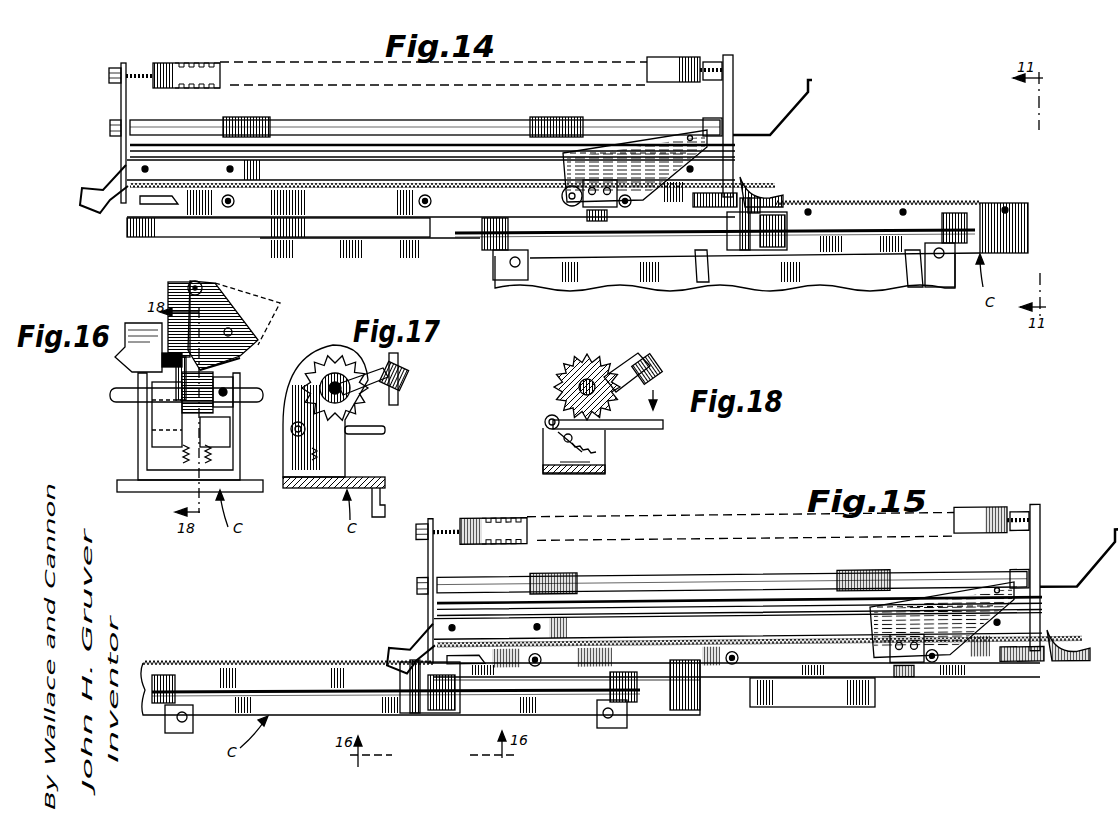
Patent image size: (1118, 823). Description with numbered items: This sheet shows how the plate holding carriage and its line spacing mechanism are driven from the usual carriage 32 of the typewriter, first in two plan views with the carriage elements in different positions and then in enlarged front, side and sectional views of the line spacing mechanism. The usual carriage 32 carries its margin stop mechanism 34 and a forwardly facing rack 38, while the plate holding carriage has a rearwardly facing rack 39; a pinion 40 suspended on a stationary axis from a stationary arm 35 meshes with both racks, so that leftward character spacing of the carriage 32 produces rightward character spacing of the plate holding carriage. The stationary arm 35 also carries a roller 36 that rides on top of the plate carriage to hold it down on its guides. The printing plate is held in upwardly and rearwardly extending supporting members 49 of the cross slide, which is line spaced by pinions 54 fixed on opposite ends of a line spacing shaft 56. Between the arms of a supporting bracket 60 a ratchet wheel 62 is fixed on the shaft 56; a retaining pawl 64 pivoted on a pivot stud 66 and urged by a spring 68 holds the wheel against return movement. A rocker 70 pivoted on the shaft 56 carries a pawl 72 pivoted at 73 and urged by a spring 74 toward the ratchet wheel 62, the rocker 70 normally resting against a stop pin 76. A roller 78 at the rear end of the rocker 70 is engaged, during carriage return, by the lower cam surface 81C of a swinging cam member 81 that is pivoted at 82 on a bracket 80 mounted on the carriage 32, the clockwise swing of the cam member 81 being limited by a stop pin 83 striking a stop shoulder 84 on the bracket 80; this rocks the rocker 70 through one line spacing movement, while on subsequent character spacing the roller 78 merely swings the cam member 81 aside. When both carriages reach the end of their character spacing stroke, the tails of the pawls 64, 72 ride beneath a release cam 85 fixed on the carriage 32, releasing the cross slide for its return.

In FIG. 14, the carriage 32 is at (746, 155).
In FIG. 15, the carriage 32 is at (1055, 628).
In FIG. 14, the margin stop mechanism 34 is at (432, 126).
In FIG. 15, the margin stop mechanism 34 is at (713, 578).
In FIG. 14, the stationary arm 35 is at (662, 180).
In FIG. 15, the stationary arm 35 is at (620, 618).
In FIG. 15, the roller 36 is at (593, 673).
In FIG. 15, the forwardly facing rack 38 is at (847, 637).
In FIG. 15, the rearwardly facing rack 39 is at (233, 663).
In FIG. 14, the pinion 40 is at (578, 192).
In FIG. 15, the pinion 40 is at (560, 648).
In FIG. 14, the supporting members 49 is at (711, 269).
In FIG. 14, the pinions 54 is at (490, 250).
In FIG. 15, the pinions 54 is at (163, 680).
In FIG. 14, the line spacing shaft 56 is at (818, 232).
In FIG. 16, the line spacing shaft 56 is at (237, 390).
In FIG. 17, the line spacing shaft 56 is at (350, 402).
In FIG. 18, the line spacing shaft 56 is at (556, 390).
In FIG. 15, the line spacing shaft 56 is at (280, 692).
In FIG. 16, the supporting bracket 60 is at (143, 427).
In FIG. 14, the ratchet wheel 62 is at (760, 250).
In FIG. 16, the ratchet wheel 62 is at (212, 374).
In FIG. 17, the ratchet wheel 62 is at (333, 365).
In FIG. 18, the ratchet wheel 62 is at (587, 352).
In FIG. 15, the ratchet wheel 62 is at (433, 713).
In FIG. 17, the retaining pawl 64 is at (388, 431).
In FIG. 17, the pivot stud 66 is at (292, 425).
In FIG. 16, the spring 68 is at (215, 452).
In FIG. 17, the spring 68 is at (320, 452).
In FIG. 14, the rocker 70 is at (745, 208).
In FIG. 16, the rocker 70 is at (145, 400).
In FIG. 17, the rocker 70 is at (383, 400).
In FIG. 18, the rocker 70 is at (623, 373).
In FIG. 18, the pawl 72 is at (660, 428).
In FIG. 18, the pivot 73 is at (545, 425).
In FIG. 16, the spring 74 is at (183, 462).
In FIG. 18, the spring 74 is at (592, 455).
In FIG. 18, the stop pin 76 is at (575, 438).
In FIG. 16, the roller 78 is at (162, 362).
In FIG. 17, the roller 78 is at (407, 385).
In FIG. 14, the bracket 80 is at (160, 195).
In FIG. 16, the bracket 80 is at (177, 280).
In FIG. 15, the bracket 80 is at (460, 653).
In FIG. 16, the swinging cam member 81 is at (215, 312).
In FIG. 17, the swinging cam member 81 is at (400, 352).
In FIG. 15, the swinging cam member 81 is at (525, 658).
In FIG. 16, the lower cam surface 81C is at (202, 372).
In FIG. 16, the pivot 82 is at (195, 281).
In FIG. 16, the stop pin 83 is at (233, 332).
In FIG. 16, the stop shoulder 84 is at (247, 314).
In FIG. 14, the release cam 85 is at (780, 194).
In FIG. 15, the release cam 85 is at (1065, 663).